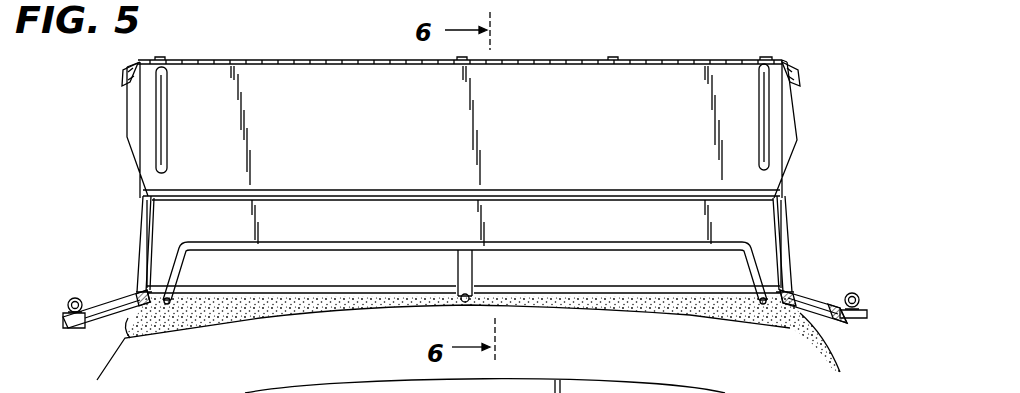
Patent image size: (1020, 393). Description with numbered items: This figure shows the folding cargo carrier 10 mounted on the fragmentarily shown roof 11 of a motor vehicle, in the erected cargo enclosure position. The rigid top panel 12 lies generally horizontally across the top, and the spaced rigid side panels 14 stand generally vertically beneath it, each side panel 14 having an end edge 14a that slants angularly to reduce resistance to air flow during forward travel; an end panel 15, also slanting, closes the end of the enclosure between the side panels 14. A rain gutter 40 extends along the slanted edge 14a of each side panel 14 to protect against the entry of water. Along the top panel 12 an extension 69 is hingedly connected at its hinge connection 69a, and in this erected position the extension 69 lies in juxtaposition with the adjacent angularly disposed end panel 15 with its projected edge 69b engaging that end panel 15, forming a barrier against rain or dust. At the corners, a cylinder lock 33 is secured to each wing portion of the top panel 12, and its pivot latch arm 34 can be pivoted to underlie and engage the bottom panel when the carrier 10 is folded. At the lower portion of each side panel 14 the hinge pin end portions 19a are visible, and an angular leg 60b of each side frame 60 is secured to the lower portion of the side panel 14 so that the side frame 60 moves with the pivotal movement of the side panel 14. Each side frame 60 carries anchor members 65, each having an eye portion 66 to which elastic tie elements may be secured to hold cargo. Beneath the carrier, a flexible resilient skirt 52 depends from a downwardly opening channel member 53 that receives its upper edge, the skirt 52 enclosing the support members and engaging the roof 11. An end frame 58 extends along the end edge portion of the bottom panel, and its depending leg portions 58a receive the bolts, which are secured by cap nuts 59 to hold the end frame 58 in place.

The folding cargo carrier 10 is at (823, 92).
The roof 11 is at (740, 316).
The top panel 12 is at (448, 129).
The side panel 14 is at (135, 192).
The end edge 14a is at (855, 224).
The end panel 15 is at (461, 233).
The end portion of hinge pin 19a is at (854, 276).
The cylinder lock 33 is at (122, 75).
The pivot latch arm 34 is at (125, 84).
The rain gutter 40 is at (138, 244).
The flexible resilient skirt 52 is at (312, 308).
The channel member 53 is at (147, 330).
The end frame 58 is at (465, 303).
The leg portion 58a is at (182, 276).
The cap nut 59 is at (162, 323).
The side frame 60 is at (470, 337).
The angular leg 60b is at (83, 333).
The anchor member 65 is at (72, 298).
The eye portion 66 is at (67, 309).
The extension 69 is at (332, 97).
The hinge connection of extension 69a is at (561, 41).
The projected edge 69b is at (378, 198).